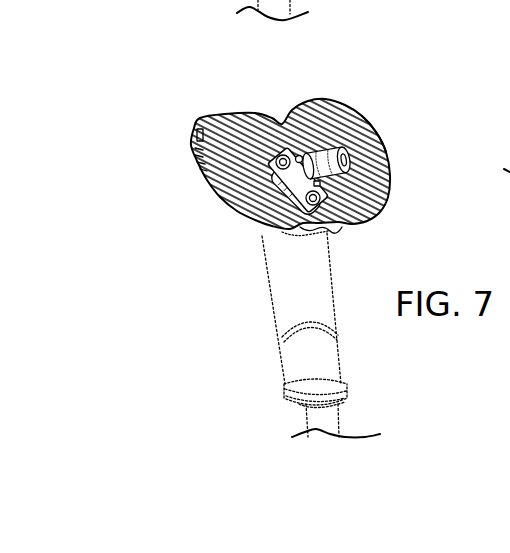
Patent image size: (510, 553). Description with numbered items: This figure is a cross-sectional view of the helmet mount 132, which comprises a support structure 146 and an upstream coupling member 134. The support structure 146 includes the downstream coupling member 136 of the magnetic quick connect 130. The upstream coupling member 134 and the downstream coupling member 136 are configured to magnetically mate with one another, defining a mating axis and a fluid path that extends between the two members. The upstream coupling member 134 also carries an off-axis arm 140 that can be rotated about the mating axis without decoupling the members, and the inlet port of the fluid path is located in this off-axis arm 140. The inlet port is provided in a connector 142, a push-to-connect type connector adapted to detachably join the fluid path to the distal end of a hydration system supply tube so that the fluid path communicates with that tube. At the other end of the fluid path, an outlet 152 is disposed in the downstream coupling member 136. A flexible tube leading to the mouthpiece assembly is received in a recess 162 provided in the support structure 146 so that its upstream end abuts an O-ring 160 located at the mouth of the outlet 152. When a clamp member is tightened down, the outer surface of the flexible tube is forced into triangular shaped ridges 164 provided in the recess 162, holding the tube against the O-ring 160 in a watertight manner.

The magnetic quick connect 130 is at (228, 221).
The helmet mount 132 is at (228, 130).
The upstream coupling member 134 is at (328, 236).
The downstream coupling member 136 is at (378, 141).
The off-axis arm 140 is at (273, 302).
The connector 142 is at (343, 363).
The support structure 146 is at (197, 175).
The outlet 152 is at (340, 156).
The O-ring 160 is at (345, 163).
The recess 162 is at (278, 206).
The triangular shaped ridges 164 is at (299, 156).